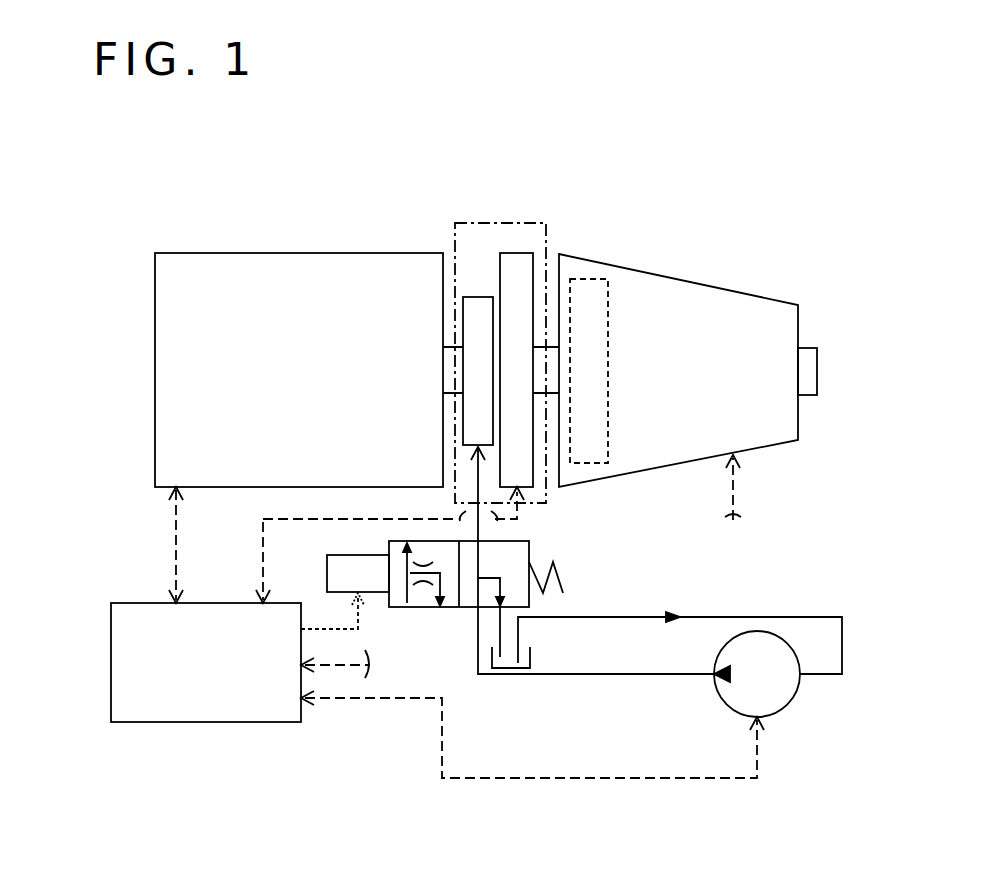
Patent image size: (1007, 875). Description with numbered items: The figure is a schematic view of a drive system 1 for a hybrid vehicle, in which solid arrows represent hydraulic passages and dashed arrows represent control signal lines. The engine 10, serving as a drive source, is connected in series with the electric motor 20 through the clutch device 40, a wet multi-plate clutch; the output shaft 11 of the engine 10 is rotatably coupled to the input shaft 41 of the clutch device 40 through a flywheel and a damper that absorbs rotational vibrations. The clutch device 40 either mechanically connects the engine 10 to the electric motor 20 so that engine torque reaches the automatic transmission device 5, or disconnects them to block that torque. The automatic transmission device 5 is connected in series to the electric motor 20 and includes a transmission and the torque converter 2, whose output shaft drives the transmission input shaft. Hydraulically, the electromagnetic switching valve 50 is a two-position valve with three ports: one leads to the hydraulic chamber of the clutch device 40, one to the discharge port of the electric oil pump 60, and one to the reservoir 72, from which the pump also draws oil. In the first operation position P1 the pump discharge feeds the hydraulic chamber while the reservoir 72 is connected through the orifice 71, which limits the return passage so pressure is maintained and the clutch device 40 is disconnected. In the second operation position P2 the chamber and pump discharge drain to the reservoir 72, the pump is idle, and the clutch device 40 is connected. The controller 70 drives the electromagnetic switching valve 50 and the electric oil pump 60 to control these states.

The drive system 1 is at (554, 224).
The torque converter 2 is at (598, 277).
The automatic transmission device 5 is at (688, 293).
The engine 10 is at (295, 265).
The output shaft 11 is at (445, 367).
The electric motor 20 is at (508, 263).
The clutch device 40 is at (465, 297).
The input shaft 41 is at (462, 352).
The electromagnetic switching valve 50 is at (467, 598).
The electric oil pump 60 is at (783, 688).
The controller 70 is at (127, 660).
The orifice 71 is at (427, 587).
The reservoir 72 is at (530, 657).
The first operation position P1 is at (402, 607).
The second operation position P2 is at (497, 541).